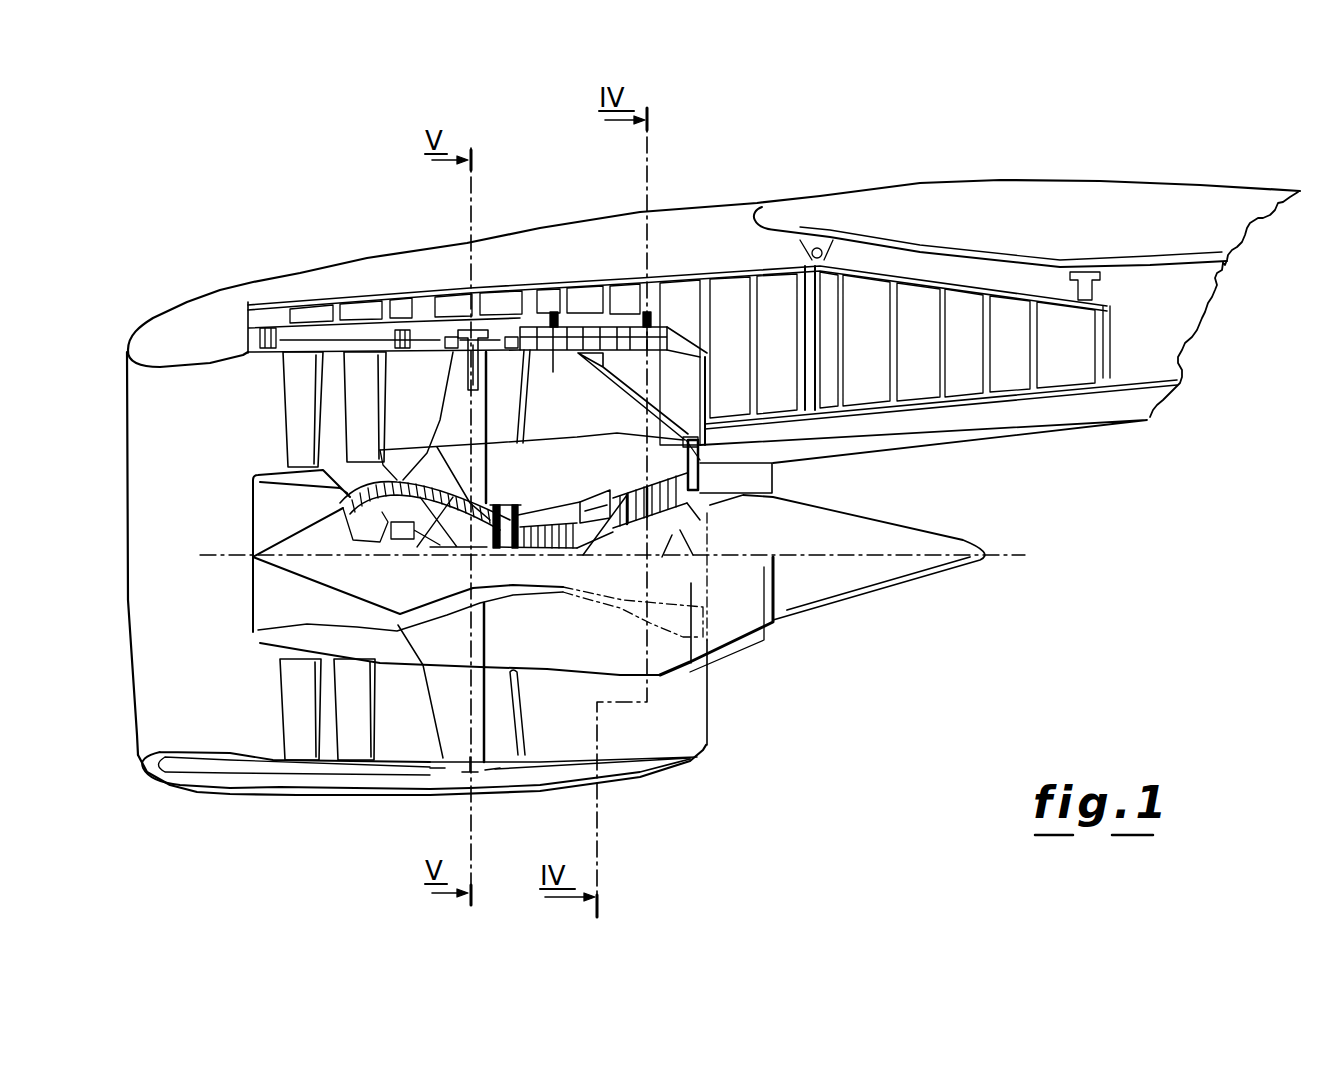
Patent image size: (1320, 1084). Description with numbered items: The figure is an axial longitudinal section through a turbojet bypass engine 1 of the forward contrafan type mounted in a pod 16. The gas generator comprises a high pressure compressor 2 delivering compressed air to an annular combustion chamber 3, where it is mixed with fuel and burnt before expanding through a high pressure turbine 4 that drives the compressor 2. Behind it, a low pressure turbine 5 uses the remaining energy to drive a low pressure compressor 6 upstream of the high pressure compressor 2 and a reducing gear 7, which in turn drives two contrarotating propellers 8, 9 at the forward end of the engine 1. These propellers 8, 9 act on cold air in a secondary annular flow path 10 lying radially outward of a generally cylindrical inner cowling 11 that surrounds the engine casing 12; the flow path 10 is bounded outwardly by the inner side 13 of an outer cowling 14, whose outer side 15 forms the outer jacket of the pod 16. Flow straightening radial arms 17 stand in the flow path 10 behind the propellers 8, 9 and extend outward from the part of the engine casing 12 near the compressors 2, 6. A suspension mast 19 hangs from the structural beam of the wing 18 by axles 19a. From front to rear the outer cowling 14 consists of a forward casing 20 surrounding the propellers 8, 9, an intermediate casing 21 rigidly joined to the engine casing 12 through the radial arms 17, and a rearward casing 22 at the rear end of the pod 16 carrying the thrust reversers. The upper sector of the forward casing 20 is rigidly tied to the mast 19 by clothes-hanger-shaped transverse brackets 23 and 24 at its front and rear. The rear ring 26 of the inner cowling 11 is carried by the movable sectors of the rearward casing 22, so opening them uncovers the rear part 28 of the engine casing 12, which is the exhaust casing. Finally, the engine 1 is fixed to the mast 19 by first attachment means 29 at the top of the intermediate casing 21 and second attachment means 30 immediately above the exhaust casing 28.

The turbojet engine 1 is at (313, 575).
The high pressure compressor 2 is at (492, 537).
The annular combustion chamber 3 is at (590, 528).
The high pressure turbine 4 is at (637, 537).
The low pressure turbine 5 is at (677, 537).
The low pressure compressor 6 is at (422, 540).
The reducing gear 7 is at (400, 540).
The contrarotating propeller 8 is at (314, 423).
The contrarotating propeller 9 is at (371, 423).
The secondary annular flow path 10 is at (264, 429).
The inner cowling 11 is at (567, 437).
The engine casing 12 is at (497, 503).
The inner side 13 is at (552, 358).
The outer cowling 14 is at (583, 773).
The outer side 15 is at (523, 797).
The pod 16 is at (744, 698).
The flow straightening radial arms 17 is at (462, 413).
The wing 18 is at (917, 200).
The suspension mast 19 is at (870, 365).
The axles 19a is at (817, 247).
The forward casing 20 is at (360, 340).
The intermediate casing 21 is at (470, 765).
The rearward casing 22 is at (613, 327).
The transverse bracket 23 is at (402, 323).
The transverse bracket 24 is at (267, 337).
The rear ring 26 is at (620, 433).
The rear part of the engine casing 28 is at (773, 482).
The first attachment means 29 is at (494, 316).
The second attachment means 30 is at (695, 432).